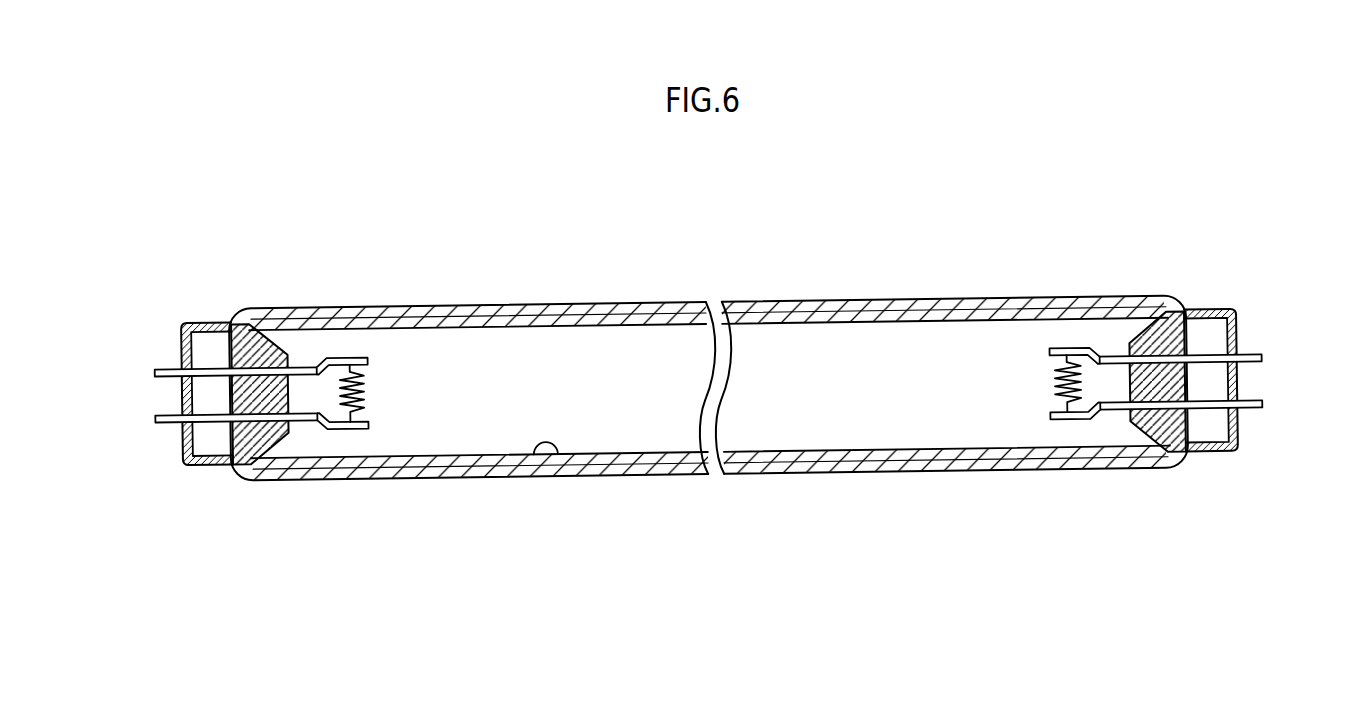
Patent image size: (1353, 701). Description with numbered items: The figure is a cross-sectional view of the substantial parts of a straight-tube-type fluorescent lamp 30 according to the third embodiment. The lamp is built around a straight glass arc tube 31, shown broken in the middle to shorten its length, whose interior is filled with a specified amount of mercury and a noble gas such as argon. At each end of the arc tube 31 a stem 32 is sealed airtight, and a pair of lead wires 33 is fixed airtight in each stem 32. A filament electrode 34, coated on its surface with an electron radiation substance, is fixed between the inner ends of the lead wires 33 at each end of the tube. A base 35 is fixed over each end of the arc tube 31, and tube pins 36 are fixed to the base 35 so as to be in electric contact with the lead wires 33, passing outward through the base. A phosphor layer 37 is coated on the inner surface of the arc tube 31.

The straight-tube-type fluorescent lamp 30 is at (715, 655).
The arc tube 31 is at (537, 306).
The stem 32 is at (247, 345).
The lead wire 33 is at (350, 358).
The filament electrode 34 is at (365, 392).
The base 35 is at (215, 463).
The tube pin 36 is at (163, 372).
The phosphor layer 37 is at (557, 456).